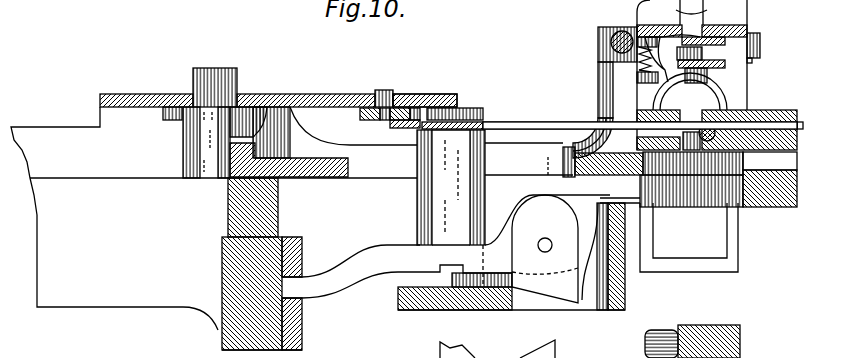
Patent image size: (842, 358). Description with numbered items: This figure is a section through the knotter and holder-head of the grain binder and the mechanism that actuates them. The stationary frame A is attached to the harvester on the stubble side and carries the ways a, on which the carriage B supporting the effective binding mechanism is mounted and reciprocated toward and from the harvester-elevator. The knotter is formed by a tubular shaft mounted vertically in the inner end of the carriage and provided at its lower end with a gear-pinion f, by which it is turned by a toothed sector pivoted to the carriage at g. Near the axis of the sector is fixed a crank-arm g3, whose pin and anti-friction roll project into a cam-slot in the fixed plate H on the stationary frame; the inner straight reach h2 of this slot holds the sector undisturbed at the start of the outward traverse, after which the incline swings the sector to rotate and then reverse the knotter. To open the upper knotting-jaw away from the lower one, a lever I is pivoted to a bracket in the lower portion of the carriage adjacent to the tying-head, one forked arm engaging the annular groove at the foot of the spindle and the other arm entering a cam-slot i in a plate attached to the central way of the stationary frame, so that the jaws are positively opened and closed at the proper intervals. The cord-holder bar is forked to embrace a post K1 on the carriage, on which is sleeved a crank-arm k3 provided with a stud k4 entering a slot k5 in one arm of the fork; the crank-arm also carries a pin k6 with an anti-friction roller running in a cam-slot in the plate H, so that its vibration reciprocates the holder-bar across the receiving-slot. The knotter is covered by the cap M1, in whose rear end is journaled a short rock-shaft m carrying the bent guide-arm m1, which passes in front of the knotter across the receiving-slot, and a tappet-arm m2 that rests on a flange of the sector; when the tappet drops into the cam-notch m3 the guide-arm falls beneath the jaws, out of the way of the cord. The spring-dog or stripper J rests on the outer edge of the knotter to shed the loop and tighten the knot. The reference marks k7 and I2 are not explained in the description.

The carriage B is at (292, 218).
The fixed plate H is at (278, 89).
The second straight reach h2 is at (187, 94).
The crank-arm g3 is at (175, 120).
The pivot g is at (283, 142).
The pin k7 is at (375, 92).
The pin k6 is at (398, 88).
The stud k4 is at (425, 94).
The crank-arm k3 is at (470, 108).
The slot k5 is at (392, 129).
The post K1 is at (451, 187).
The stationary frame A is at (225, 283).
The clamp plate I2 is at (300, 324).
The ways a is at (262, 352).
The cam-slot i is at (305, 276).
The lever I is at (456, 246).
The bent guide-arm m1 is at (598, 44).
The tappet m2 is at (645, 332).
The cam-notch m3 is at (573, 150).
The cap M1 is at (748, 14).
The spring-dog J is at (681, 59).
The rock-shaft m is at (761, 42).
The gear-pinion f is at (745, 165).